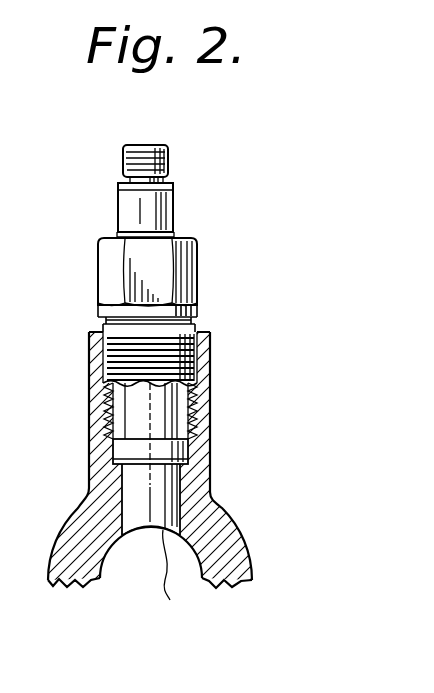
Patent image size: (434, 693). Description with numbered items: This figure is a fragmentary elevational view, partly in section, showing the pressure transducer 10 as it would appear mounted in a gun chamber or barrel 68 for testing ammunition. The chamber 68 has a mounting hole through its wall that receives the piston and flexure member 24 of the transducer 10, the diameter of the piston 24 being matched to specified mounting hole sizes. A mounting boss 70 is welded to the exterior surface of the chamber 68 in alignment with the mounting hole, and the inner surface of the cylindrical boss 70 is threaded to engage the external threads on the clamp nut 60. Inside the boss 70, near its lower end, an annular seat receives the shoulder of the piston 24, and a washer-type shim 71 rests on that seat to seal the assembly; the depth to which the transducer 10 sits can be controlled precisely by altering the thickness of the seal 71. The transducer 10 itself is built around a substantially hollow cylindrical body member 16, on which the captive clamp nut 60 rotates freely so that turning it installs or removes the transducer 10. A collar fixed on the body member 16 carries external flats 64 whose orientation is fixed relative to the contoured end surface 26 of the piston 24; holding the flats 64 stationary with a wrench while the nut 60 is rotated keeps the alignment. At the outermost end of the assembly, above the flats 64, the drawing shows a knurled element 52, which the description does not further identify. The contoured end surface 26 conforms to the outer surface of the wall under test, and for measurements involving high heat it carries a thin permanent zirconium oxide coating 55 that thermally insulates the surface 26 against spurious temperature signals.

The pressure transducer 10 is at (80, 318).
The adjusting knob 52 is at (125, 159).
The external flats 64 is at (118, 195).
The clamp nut 60 is at (193, 273).
The mounting boss 70 is at (200, 388).
The cylindrical body member 16 is at (133, 404).
The washer-type shim 71 is at (125, 451).
The piston and flexure member 24 is at (184, 481).
The gun chamber or barrel 68 is at (253, 570).
The contoured end surface 26 is at (130, 530).
The coating 55 is at (181, 579).